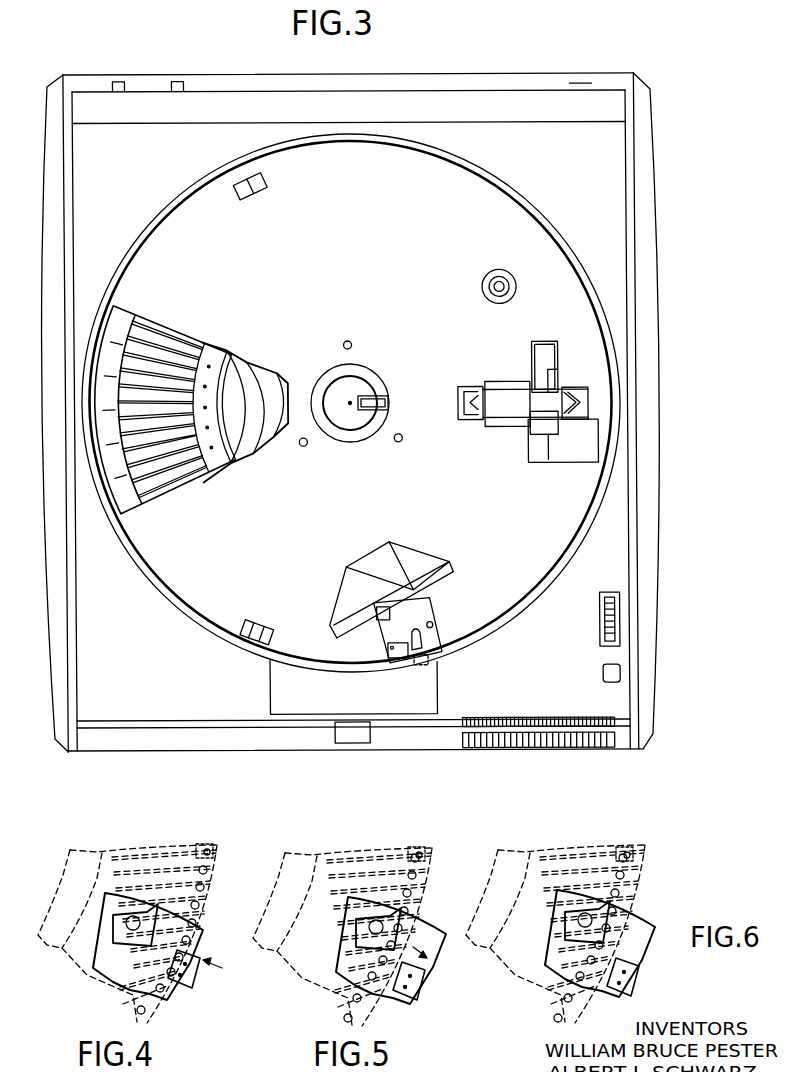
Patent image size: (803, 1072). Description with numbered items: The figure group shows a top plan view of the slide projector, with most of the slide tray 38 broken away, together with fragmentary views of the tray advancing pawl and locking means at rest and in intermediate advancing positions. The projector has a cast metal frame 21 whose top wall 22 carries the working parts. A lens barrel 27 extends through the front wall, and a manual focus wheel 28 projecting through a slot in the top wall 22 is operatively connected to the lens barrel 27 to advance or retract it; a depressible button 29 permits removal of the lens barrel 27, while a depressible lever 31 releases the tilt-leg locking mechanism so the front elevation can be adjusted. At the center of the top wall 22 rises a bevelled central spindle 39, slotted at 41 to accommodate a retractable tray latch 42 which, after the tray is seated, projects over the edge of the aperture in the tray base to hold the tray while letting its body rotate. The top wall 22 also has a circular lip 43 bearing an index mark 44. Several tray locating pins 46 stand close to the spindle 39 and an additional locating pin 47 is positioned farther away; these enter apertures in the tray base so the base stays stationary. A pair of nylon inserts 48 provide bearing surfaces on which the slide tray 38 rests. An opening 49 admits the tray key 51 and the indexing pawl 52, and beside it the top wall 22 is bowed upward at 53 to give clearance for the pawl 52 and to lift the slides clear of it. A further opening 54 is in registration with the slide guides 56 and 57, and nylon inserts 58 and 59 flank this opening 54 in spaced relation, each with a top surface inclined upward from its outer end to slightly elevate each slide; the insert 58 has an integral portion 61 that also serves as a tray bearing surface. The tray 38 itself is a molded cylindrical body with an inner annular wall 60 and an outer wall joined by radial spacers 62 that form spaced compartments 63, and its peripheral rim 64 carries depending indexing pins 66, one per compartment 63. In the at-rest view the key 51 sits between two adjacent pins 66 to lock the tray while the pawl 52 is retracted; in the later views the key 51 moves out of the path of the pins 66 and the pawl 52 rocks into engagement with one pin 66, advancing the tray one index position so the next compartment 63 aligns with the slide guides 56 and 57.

In FIG. 3, the cast metal frame 21 is at (650, 248).
In FIG. 3, the top wall 22 is at (390, 212).
In FIG. 3, the lens barrel 27 is at (610, 741).
In FIG. 3, the manual focus wheel 28 is at (610, 606).
In FIG. 3, the depressible button 29 is at (616, 678).
In FIG. 3, the depressible lever 31 is at (350, 738).
In FIG. 4, the slide tray 38 is at (111, 838).
In FIG. 5, the slide tray 38 is at (325, 812).
In FIG. 6, the slide tray 38 is at (539, 815).
In FIG. 3, the central spindle 39 is at (353, 385).
In FIG. 3, the slot 41 is at (376, 397).
In FIG. 3, the retractable tray latch 42 is at (388, 405).
In FIG. 3, the circular lip 43 is at (157, 226).
In FIG. 3, the index mark 44 is at (613, 408).
In FIG. 3, the tray locating pins 46 is at (352, 344).
In FIG. 3, the additional locating pin 47 is at (513, 283).
In FIG. 3, the nylon inserts 48 is at (265, 180).
In FIG. 3, the opening 49 is at (431, 623).
In FIG. 3, the tray key 51 is at (420, 637).
In FIG. 4, the tray key 51 is at (197, 947).
In FIG. 5, the tray key 51 is at (427, 970).
In FIG. 6, the tray key 51 is at (637, 958).
In FIG. 3, the indexing pawl 52 is at (388, 612).
In FIG. 4, the indexing pawl 52 is at (157, 940).
In FIG. 5, the indexing pawl 52 is at (397, 947).
In FIG. 6, the indexing pawl 52 is at (620, 942).
In FIG. 3, the upwardly bowed portion 53 is at (378, 560).
In FIG. 3, the opening 54 is at (514, 383).
In FIG. 3, the slide guide 56 is at (578, 394).
In FIG. 3, the slide guide 57 is at (468, 393).
In FIG. 3, the nylon insert 58 is at (540, 448).
In FIG. 3, the nylon insert 59 is at (549, 358).
In FIG. 3, the inner annular wall 60 is at (247, 370).
In FIG. 3, the integral portion / outer annular wall 61 is at (576, 453).
In FIG. 3, the radial spacers 62 is at (183, 338).
In FIG. 4, the radial spacers 62 is at (130, 843).
In FIG. 5, the radial spacers 62 is at (347, 845).
In FIG. 6, the radial spacers 62 is at (567, 840).
In FIG. 3, the compartments 63 is at (158, 318).
In FIG. 4, the compartments 63 is at (162, 845).
In FIG. 5, the compartments 63 is at (372, 857).
In FIG. 6, the compartments 63 is at (587, 842).
In FIG. 3, the peripheral rim 64 is at (112, 309).
In FIG. 4, the peripheral rim 64 is at (213, 868).
In FIG. 5, the peripheral rim 64 is at (422, 891).
In FIG. 6, the peripheral rim 64 is at (633, 900).
In FIG. 4, the indexing pins 66 is at (210, 843).
In FIG. 5, the indexing pins 66 is at (423, 873).
In FIG. 6, the indexing pins 66 is at (650, 865).